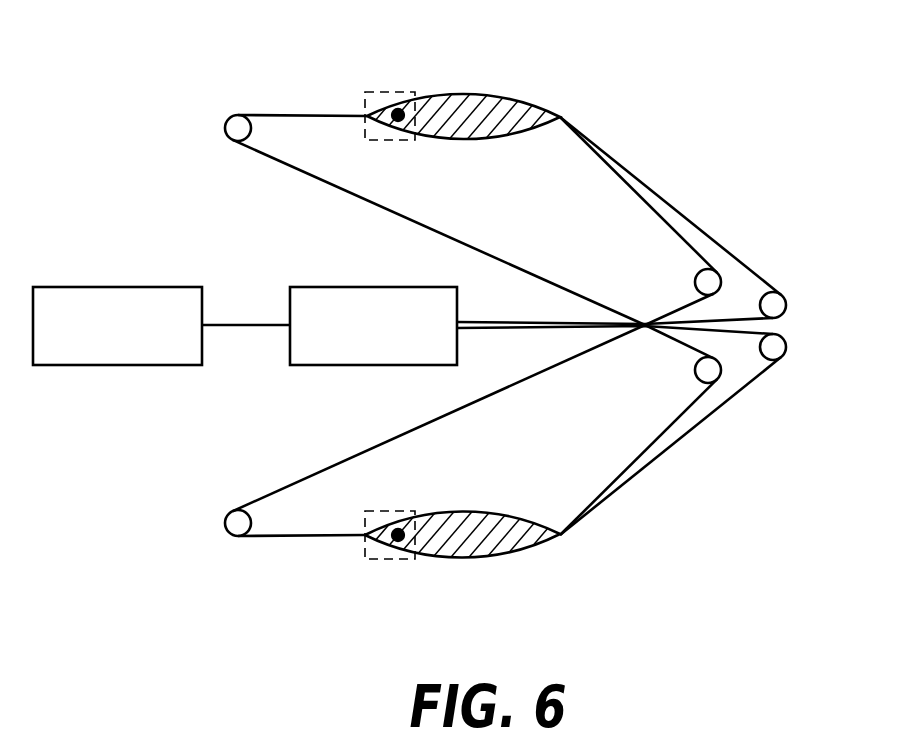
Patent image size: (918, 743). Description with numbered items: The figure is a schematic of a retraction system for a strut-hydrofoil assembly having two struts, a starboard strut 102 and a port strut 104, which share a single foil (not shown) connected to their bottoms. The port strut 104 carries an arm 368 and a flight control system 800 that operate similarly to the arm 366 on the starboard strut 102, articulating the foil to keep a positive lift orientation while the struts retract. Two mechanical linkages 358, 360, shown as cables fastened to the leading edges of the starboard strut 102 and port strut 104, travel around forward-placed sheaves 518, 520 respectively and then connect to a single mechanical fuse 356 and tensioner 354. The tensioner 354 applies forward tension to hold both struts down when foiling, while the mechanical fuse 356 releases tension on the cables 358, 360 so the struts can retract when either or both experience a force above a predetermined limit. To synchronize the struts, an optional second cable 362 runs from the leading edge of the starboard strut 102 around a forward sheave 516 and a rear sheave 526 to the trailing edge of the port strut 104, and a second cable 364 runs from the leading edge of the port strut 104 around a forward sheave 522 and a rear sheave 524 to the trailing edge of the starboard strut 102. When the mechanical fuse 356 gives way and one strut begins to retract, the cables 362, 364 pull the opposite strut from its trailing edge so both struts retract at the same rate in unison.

The starboard strut 102 is at (462, 560).
The port strut 104 is at (462, 92).
The tensioner 354 is at (115, 287).
The mechanical fuse 356 is at (370, 287).
The mechanical linkage 358 is at (716, 411).
The mechanical linkage 360 is at (726, 244).
The second cable 362 is at (640, 456).
The second cable 364 is at (640, 193).
The arm 366 is at (392, 545).
The arm 368 is at (391, 108).
The forward sheave 516 is at (695, 370).
The forward-placed sheave 518 is at (786, 347).
The forward-placed sheave 520 is at (786, 305).
The forward sheave 522 is at (695, 282).
The rear sheave 524 is at (225, 523).
The rear sheave 526 is at (225, 128).
The flight control system 800 is at (402, 142).